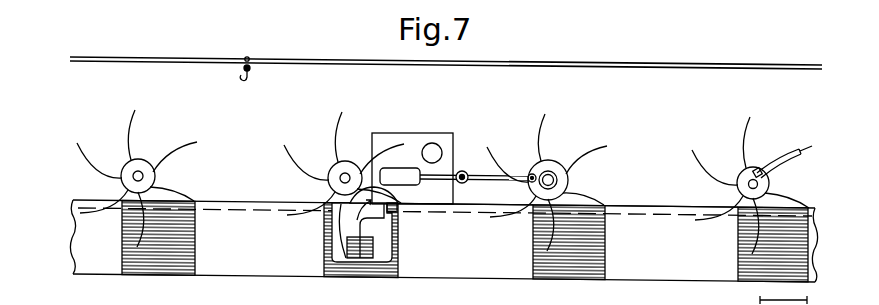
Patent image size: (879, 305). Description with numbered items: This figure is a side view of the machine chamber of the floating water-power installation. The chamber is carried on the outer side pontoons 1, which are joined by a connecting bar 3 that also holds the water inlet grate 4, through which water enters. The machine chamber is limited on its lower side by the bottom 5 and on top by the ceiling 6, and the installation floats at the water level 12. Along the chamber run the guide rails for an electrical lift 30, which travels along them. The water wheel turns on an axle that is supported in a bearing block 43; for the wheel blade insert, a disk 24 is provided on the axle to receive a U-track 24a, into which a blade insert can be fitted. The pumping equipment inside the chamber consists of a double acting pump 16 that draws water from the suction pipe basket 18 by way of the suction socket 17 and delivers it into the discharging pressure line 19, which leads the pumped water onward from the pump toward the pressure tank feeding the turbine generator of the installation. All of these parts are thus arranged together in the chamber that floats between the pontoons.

The side pontoon 1 is at (230, 262).
The connecting bar 3 is at (418, 278).
The water inlet grate 4 is at (592, 277).
The bottom of the machine chamber 5 is at (657, 207).
The ceiling of the machine chamber 6 is at (662, 70).
The water level 12 is at (232, 212).
The pump 16 is at (380, 137).
The suction socket 17 is at (367, 228).
The suction pipe basket 18 is at (357, 258).
The pressure line 19 is at (433, 152).
The disk on the axle 24 is at (748, 178).
The U-track 24a is at (782, 143).
The electrical lift 30 is at (250, 79).
The bearing block 43 is at (552, 195).